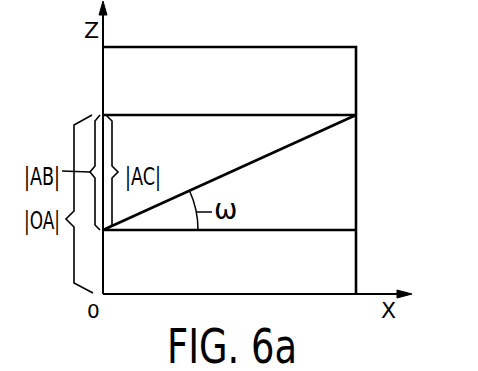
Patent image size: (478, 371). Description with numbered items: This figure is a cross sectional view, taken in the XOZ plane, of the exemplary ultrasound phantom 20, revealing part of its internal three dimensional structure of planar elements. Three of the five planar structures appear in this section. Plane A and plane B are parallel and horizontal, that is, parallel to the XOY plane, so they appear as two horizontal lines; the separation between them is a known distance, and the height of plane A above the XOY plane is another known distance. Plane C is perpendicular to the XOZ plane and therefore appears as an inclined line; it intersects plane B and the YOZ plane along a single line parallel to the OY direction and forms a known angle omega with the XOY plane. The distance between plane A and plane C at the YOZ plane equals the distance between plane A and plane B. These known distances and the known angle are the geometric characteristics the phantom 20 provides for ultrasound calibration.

The ultrasound phantom 20 is at (213, 47).
The plane A is at (250, 115).
The plane B is at (328, 229).
The plane C is at (243, 166).